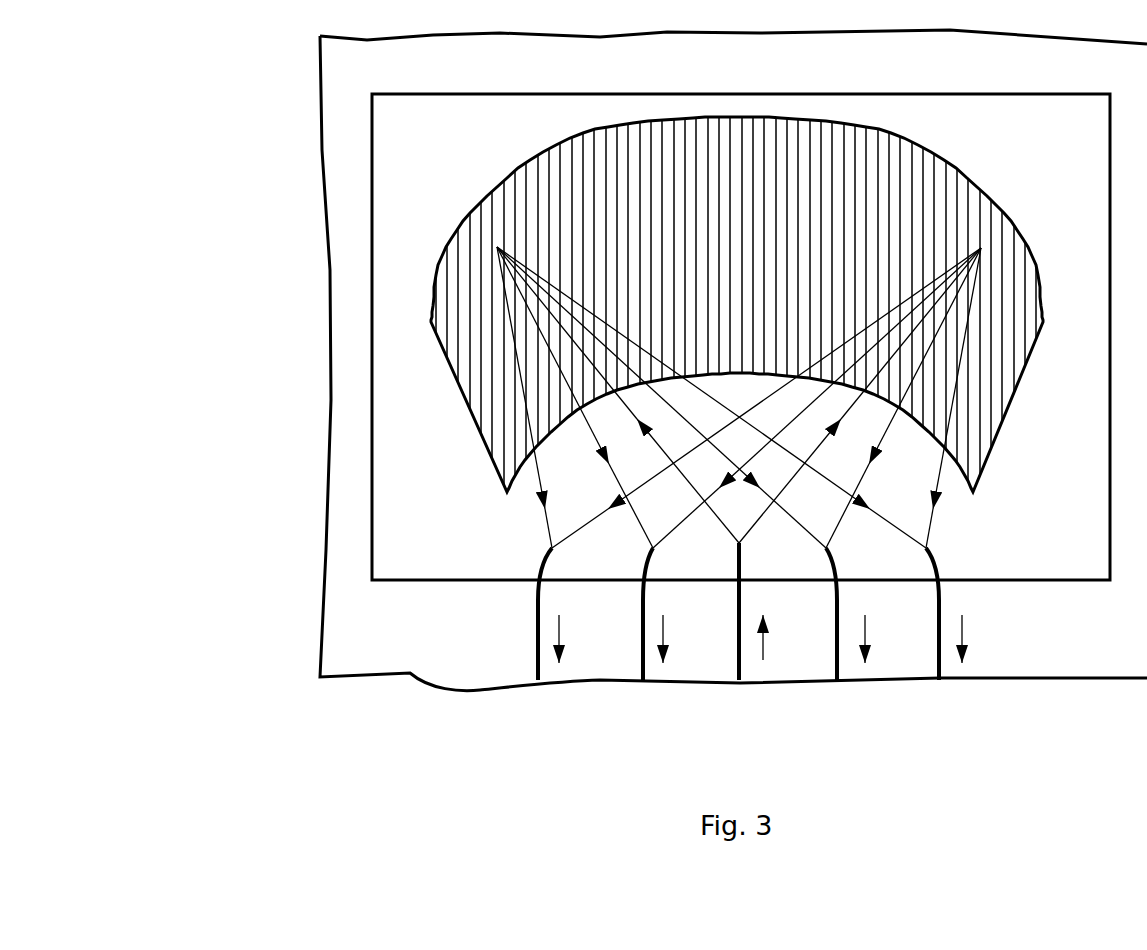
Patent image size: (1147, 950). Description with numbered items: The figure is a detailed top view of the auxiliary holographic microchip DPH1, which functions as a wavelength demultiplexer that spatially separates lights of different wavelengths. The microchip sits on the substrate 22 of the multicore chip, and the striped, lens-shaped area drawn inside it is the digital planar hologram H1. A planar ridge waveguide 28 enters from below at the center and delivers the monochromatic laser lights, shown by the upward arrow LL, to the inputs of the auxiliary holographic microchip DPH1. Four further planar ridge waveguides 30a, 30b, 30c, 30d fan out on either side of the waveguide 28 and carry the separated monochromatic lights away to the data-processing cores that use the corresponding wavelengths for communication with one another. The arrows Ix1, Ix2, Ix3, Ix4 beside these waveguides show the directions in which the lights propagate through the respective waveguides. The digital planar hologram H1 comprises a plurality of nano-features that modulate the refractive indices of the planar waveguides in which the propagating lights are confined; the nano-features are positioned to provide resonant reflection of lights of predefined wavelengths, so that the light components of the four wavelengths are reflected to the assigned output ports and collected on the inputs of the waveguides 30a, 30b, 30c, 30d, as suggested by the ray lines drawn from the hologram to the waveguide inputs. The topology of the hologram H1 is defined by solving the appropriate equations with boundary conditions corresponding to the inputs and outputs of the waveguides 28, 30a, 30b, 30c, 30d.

The substrate 22 is at (352, 392).
The auxiliary holographic microchip DPH1 is at (372, 115).
The digital planar hologram H1 is at (503, 225).
The planar ridge waveguide 28 is at (738, 650).
The planar ridge waveguide 30a is at (537, 645).
The planar ridge waveguide 30b is at (641, 650).
The planar ridge waveguide 30c is at (839, 657).
The planar ridge waveguide 30d is at (940, 660).
The laser light LL is at (742, 655).
The arrow showing direction of light Ix1 is at (558, 634).
The arrow showing direction of light Ix2 is at (665, 637).
The arrow showing direction of light Ix3 is at (868, 630).
The arrow showing direction of light Ix4 is at (963, 630).